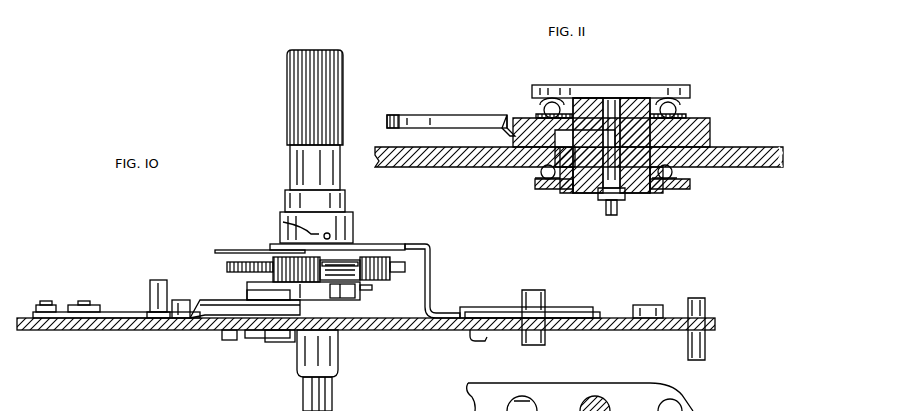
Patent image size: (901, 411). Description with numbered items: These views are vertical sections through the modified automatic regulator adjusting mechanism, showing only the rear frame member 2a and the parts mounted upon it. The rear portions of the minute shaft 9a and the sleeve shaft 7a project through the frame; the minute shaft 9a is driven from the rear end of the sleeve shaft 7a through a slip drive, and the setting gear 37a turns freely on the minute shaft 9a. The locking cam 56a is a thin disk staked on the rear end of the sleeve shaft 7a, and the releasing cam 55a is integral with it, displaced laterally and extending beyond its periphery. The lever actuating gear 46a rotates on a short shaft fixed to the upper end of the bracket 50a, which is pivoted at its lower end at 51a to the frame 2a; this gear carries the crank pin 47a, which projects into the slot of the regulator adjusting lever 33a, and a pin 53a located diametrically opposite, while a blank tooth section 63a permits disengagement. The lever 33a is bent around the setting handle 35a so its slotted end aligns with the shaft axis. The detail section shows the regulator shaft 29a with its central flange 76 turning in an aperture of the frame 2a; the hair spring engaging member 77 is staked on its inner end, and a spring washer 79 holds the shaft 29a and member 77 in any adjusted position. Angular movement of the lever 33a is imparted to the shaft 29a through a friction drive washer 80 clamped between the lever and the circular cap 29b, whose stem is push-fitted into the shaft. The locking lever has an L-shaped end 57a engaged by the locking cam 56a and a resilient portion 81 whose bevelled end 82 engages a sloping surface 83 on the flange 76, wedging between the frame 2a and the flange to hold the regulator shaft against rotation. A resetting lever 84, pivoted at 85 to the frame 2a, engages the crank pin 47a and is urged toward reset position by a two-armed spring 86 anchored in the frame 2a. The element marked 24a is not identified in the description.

In FIG. 10, the rear frame member 2a is at (146, 330).
In FIG. 11, the rear frame member 2a is at (474, 167).
In FIG. 10, the sleeve shaft 7a is at (300, 366).
In FIG. 10, the minute shaft 9a is at (332, 396).
In FIG. 11, the pivot bolt 24a is at (618, 200).
In FIG. 11, the regulator shaft 29a is at (694, 124).
In FIG. 10, the circular cap 29b is at (230, 300).
In FIG. 11, the circular cap 29b is at (610, 85).
In FIG. 10, the regulator adjusting lever 33a is at (270, 246).
In FIG. 11, the regulator adjusting lever 33a is at (686, 109).
In FIG. 10, the setting handle 35a is at (300, 127).
In FIG. 10, the setting gear 37a is at (211, 252).
In FIG. 10, the lever actuating gear 46a is at (376, 262).
In FIG. 10, the crank pin 47a is at (286, 209).
In FIG. 10, the bracket 50a is at (172, 300).
In FIG. 10, the bracket pivot 51a is at (88, 304).
In FIG. 10, the pin 53a is at (342, 320).
In FIG. 10, the releasing cam 55a is at (372, 288).
In FIG. 10, the locking cam 56a is at (288, 332).
In FIG. 10, the L-shaped end portion 57a is at (205, 331).
In FIG. 10, the blank tooth section 63a is at (350, 261).
In FIG. 11, the central flange portion 76 is at (530, 116).
In FIG. 10, the hair spring engaging member 77 is at (250, 338).
In FIG. 11, the hair spring engaging member 77 is at (582, 188).
In FIG. 10, the spring washer 79 is at (230, 333).
In FIG. 11, the spring washer 79 is at (546, 178).
In FIG. 10, the friction drive washer 80 is at (247, 295).
In FIG. 11, the friction drive washer 80 is at (668, 107).
In FIG. 11, the resilient portion of locking lever 81 is at (424, 122).
In FIG. 11, the bevelled end 82 is at (508, 127).
In FIG. 11, the sloping surface 83 is at (528, 166).
In FIG. 10, the resetting lever 84 is at (432, 264).
In FIG. 10, the resetting lever pivot 85 is at (637, 305).
In FIG. 10, the two-armed spring 86 is at (546, 305).